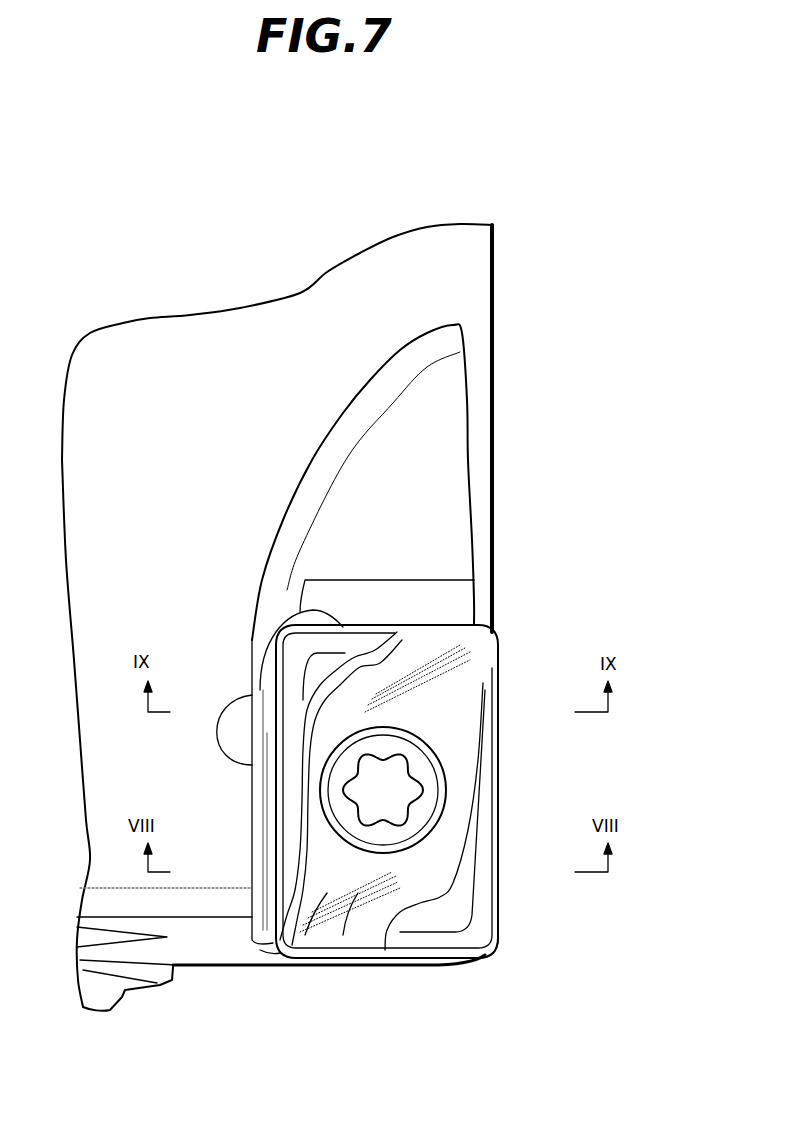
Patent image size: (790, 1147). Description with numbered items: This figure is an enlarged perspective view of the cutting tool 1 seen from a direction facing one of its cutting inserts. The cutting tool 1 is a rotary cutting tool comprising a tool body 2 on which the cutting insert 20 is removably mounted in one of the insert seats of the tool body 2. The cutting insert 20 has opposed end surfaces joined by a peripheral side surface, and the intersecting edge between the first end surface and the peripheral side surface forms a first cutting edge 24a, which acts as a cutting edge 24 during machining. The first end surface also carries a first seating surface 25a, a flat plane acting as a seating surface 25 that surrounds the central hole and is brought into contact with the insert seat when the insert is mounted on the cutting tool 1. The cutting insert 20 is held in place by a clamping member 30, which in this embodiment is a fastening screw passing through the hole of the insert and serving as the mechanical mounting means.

The cutting tool 1 is at (186, 492).
The tool body 2 is at (293, 420).
The cutting insert 20 is at (387, 903).
The cutting edge 24 is at (493, 950).
The first cutting edge 24a is at (505, 912).
The seating surface 25 is at (358, 893).
The first seating surface 25a is at (327, 893).
The clamping member 30 is at (408, 747).